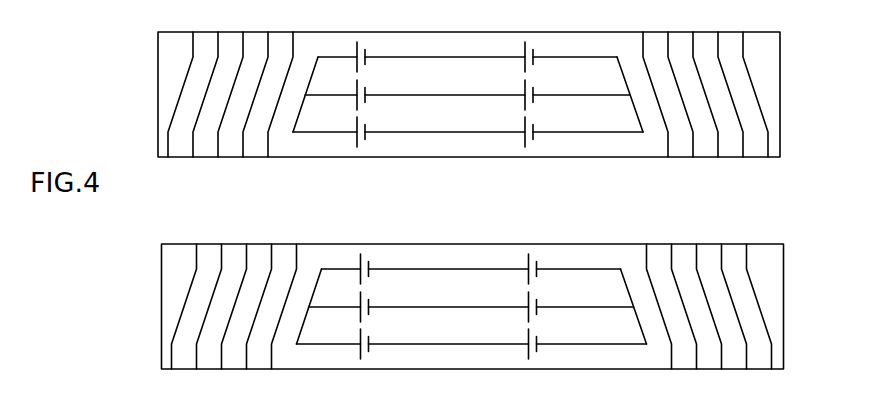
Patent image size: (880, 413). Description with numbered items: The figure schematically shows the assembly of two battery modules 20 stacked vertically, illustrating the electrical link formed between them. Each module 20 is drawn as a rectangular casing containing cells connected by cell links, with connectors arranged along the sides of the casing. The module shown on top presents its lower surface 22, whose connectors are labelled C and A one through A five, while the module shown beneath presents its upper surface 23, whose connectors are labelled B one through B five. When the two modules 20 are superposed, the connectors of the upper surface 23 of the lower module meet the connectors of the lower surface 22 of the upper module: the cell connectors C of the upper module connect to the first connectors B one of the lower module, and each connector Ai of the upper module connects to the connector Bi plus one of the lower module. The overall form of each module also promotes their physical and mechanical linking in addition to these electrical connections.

The battery module 20 is at (502, 200).
The lower surface 22 is at (440, 157).
The upper surface 23 is at (491, 244).